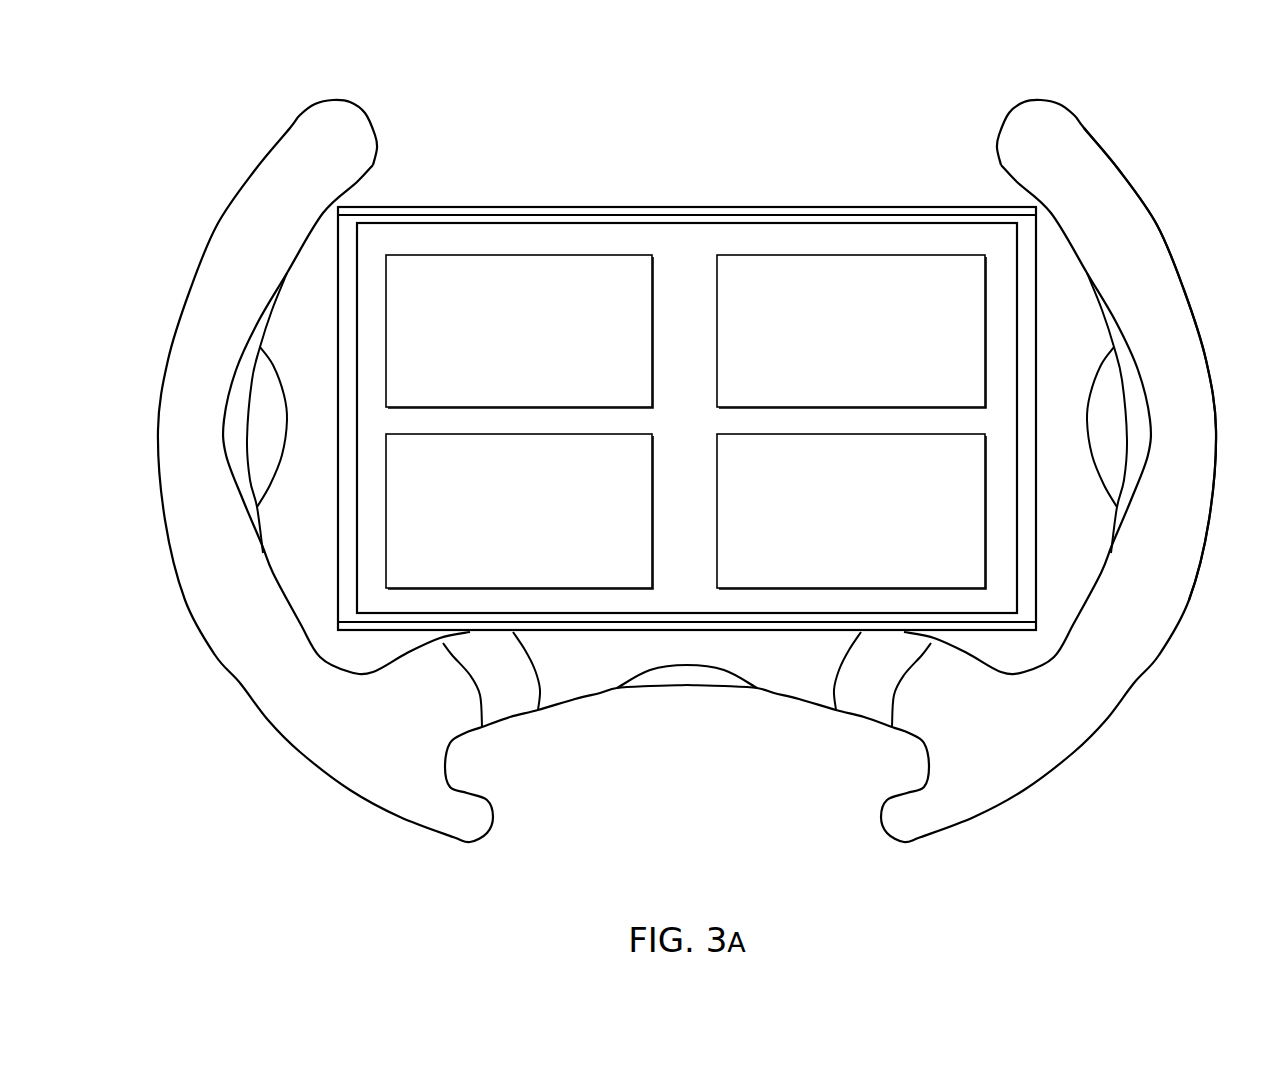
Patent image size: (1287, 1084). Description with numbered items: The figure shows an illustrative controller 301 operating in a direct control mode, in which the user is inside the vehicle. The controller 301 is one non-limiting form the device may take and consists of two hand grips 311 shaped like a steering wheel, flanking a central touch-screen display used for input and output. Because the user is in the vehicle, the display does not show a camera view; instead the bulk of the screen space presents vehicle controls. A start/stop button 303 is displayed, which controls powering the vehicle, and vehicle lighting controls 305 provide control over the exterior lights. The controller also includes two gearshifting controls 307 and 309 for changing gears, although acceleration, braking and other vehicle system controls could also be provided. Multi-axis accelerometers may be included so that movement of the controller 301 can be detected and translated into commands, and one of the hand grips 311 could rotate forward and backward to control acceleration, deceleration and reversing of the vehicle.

The controller 301 is at (1068, 76).
The start/stop button 303 is at (522, 255).
The vehicle lighting controls 305 is at (850, 255).
The gearshifting control 307 is at (590, 590).
The gearshifting control 309 is at (765, 590).
The hand grip 311 is at (1150, 300).